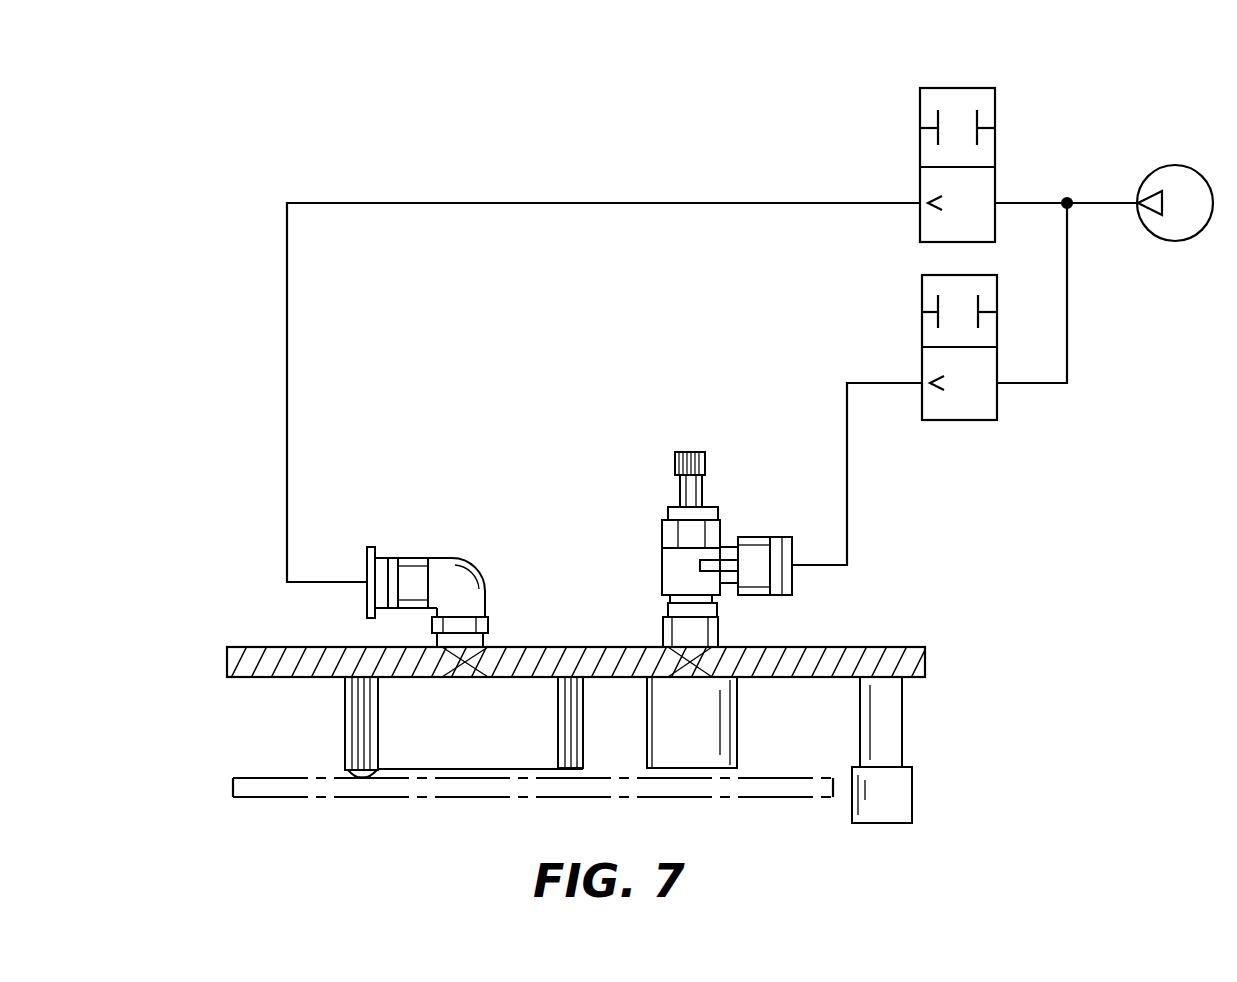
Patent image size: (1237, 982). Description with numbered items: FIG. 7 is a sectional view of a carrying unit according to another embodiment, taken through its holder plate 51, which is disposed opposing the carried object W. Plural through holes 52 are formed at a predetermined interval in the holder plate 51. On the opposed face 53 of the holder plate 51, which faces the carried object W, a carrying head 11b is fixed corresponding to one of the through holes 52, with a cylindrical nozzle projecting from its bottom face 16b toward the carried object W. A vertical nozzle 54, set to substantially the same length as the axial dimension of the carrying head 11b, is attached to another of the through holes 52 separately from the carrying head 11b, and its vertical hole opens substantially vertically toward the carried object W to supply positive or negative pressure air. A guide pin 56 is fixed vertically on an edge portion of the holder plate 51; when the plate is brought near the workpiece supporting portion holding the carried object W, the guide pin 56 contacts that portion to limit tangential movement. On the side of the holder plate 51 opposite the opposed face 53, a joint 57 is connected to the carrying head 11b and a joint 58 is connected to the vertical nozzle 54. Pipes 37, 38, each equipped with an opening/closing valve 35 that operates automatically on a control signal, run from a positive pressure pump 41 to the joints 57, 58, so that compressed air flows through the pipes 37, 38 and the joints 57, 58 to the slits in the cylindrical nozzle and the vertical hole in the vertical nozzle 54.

The opening/closing valve 35 is at (948, 88).
The positive pressure pump 41 is at (1175, 167).
The pipe 37 is at (557, 201).
The pipe 38 is at (1068, 308).
The joint 57 is at (447, 575).
The joint 58 is at (672, 562).
The through hole 52 is at (500, 648).
The holder plate 51 is at (247, 645).
The opposed face 53 is at (232, 677).
The carrying head 11b is at (400, 697).
The bottom face 16b is at (340, 778).
The vertical nozzle 54 is at (713, 728).
The guide pin 56 is at (882, 808).
The carried object W is at (768, 800).